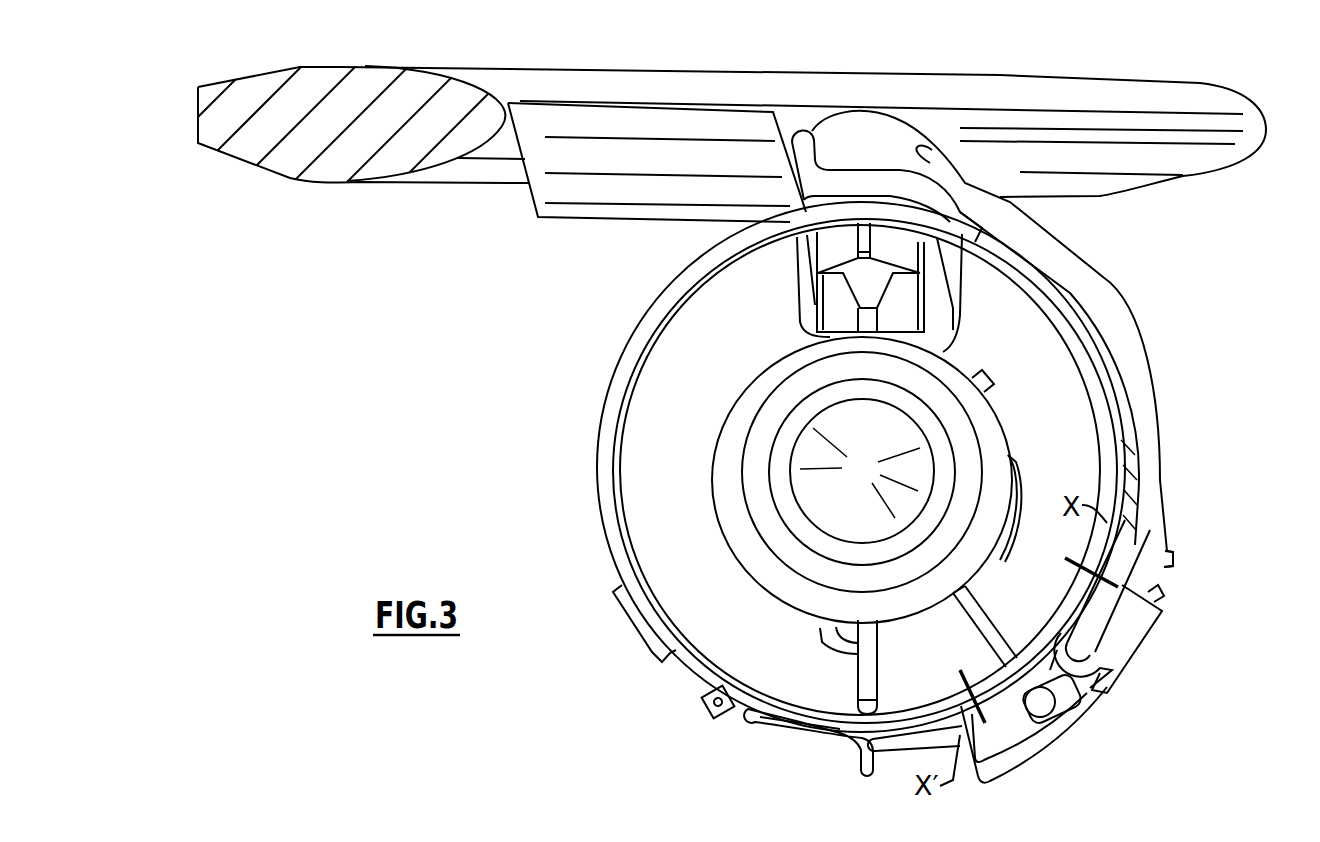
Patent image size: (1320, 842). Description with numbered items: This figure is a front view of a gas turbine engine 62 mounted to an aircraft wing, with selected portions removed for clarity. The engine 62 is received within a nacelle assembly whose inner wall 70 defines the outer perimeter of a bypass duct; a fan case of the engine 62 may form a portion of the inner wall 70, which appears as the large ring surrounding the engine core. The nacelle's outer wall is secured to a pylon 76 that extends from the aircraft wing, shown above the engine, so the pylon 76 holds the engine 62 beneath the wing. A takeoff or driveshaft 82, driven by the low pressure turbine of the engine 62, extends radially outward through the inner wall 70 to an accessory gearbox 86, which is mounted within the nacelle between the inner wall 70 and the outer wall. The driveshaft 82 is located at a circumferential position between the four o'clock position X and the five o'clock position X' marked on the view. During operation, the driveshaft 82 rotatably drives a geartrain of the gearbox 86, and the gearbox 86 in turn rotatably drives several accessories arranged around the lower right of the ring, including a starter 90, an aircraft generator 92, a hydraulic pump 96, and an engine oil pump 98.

The engine 62 is at (1200, 309).
The inner wall 70 is at (1115, 413).
The pylon 76 is at (930, 163).
The driveshaft 82 is at (987, 622).
The accessory gearbox 86 is at (1159, 606).
The starter 90 is at (1100, 677).
The aircraft generator 92 is at (1040, 702).
The hydraulic pump 96 is at (1143, 580).
The engine oil pump 98 is at (1167, 557).